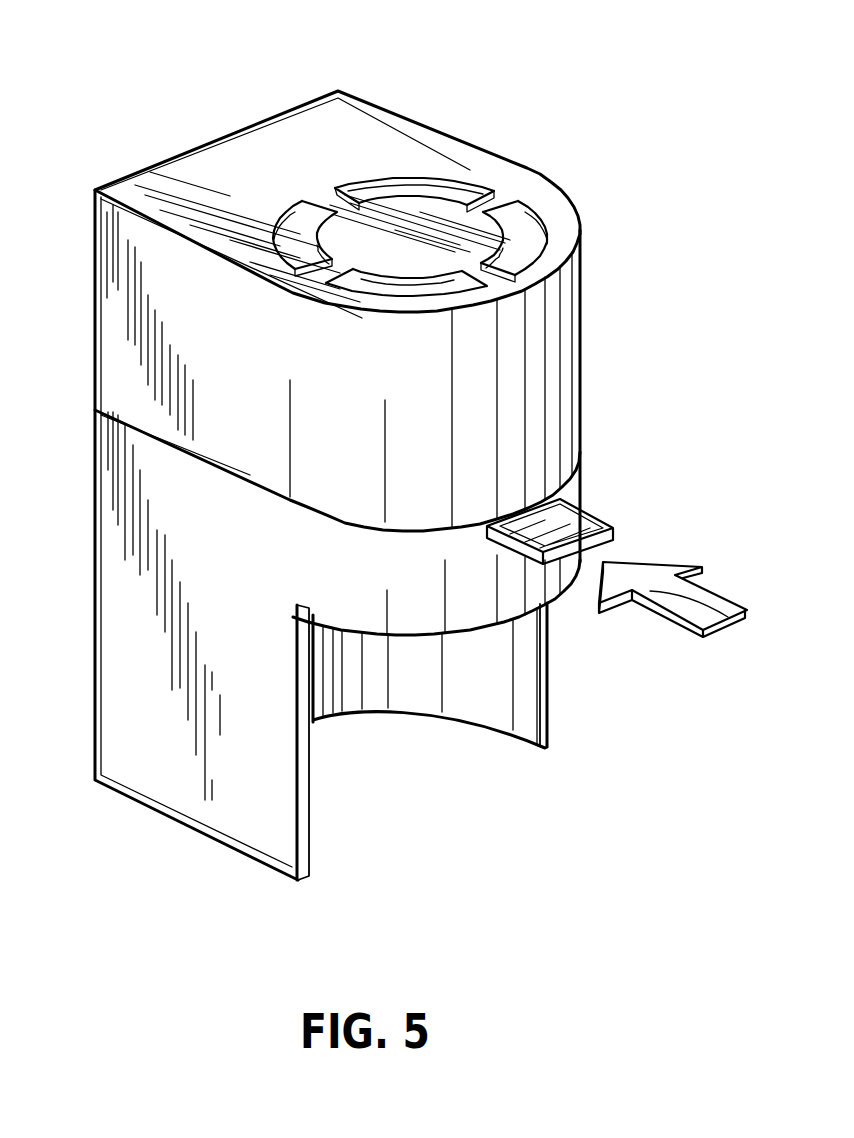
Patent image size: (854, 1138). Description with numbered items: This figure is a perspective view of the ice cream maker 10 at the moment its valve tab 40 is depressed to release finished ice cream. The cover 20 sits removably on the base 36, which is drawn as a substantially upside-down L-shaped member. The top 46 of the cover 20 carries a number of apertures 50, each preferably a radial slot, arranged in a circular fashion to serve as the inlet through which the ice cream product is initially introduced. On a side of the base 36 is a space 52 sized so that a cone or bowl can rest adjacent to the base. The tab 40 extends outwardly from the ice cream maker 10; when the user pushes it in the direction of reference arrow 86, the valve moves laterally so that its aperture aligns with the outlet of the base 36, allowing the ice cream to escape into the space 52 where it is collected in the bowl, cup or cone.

The ice cream maker 10 is at (643, 193).
The cover 20 is at (117, 300).
The base 36 is at (157, 738).
The tab 40 is at (580, 522).
The top 46 is at (293, 142).
The apertures 50 is at (403, 190).
The space 52 is at (333, 683).
The reference arrow 86 is at (728, 617).